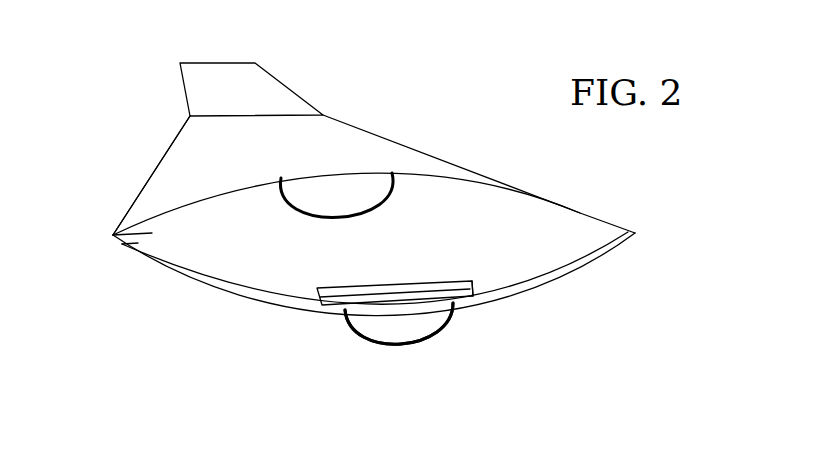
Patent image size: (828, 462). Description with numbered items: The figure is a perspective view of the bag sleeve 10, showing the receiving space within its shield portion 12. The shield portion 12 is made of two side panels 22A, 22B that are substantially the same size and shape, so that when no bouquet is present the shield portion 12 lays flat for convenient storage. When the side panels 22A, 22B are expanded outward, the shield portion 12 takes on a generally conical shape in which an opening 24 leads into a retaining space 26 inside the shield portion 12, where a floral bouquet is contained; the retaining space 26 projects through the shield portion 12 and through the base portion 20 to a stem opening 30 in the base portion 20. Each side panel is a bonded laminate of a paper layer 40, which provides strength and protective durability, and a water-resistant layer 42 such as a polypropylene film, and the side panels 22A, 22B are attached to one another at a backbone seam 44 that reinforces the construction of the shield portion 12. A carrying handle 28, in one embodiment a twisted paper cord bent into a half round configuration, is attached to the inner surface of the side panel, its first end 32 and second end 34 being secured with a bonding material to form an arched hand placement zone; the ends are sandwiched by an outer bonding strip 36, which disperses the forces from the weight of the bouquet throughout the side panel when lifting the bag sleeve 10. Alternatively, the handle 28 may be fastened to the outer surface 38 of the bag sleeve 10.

The bag sleeve 10 is at (343, 204).
The shield portion 12 is at (450, 162).
The base portion 20 is at (287, 88).
The side panel 22A is at (187, 153).
The side panel 22B is at (223, 292).
The opening 24 is at (222, 252).
The retaining space 26 is at (565, 222).
The carrying handle 28 is at (447, 342).
The stem opening 30 is at (209, 46).
The first end 32 is at (343, 310).
The second end 34 is at (457, 303).
The outer bonding strip 36 is at (497, 298).
The outer surface 38 is at (377, 145).
The paper layer 40 is at (138, 243).
The water-resistant layer 42 is at (113, 236).
The backbone seam 44 is at (140, 190).